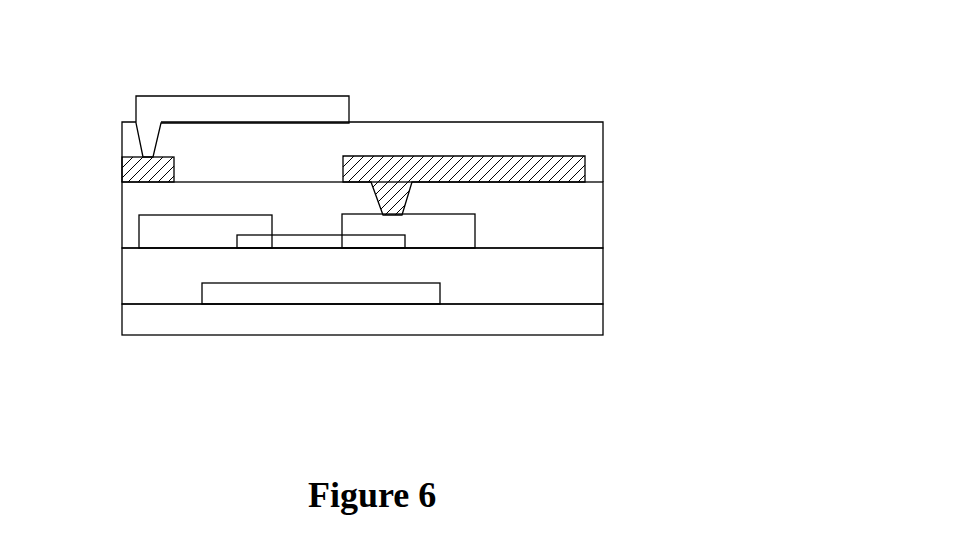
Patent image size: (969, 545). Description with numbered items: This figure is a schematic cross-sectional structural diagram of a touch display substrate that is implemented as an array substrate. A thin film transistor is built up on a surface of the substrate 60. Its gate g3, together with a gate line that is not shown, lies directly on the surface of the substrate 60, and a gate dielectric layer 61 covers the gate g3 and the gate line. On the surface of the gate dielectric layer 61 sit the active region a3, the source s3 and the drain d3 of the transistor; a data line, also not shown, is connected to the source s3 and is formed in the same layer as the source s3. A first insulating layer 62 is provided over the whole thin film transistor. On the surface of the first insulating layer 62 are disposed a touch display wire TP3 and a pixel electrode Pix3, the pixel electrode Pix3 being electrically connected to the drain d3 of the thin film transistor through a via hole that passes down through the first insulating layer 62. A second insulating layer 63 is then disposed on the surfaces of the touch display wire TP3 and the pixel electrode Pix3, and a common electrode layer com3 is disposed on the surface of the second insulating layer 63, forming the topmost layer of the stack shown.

The substrate 60 is at (412, 335).
The gate dielectric layer 61 is at (583, 277).
The first insulating layer 62 is at (583, 228).
The second insulating layer 63 is at (582, 143).
The gate g3 is at (343, 293).
The active region a3 is at (300, 243).
The source s3 is at (178, 228).
The drain d3 is at (443, 233).
The touch display wire TP3 is at (122, 162).
The pixel electrode Pix3 is at (503, 155).
The common electrode layer com3 is at (251, 96).